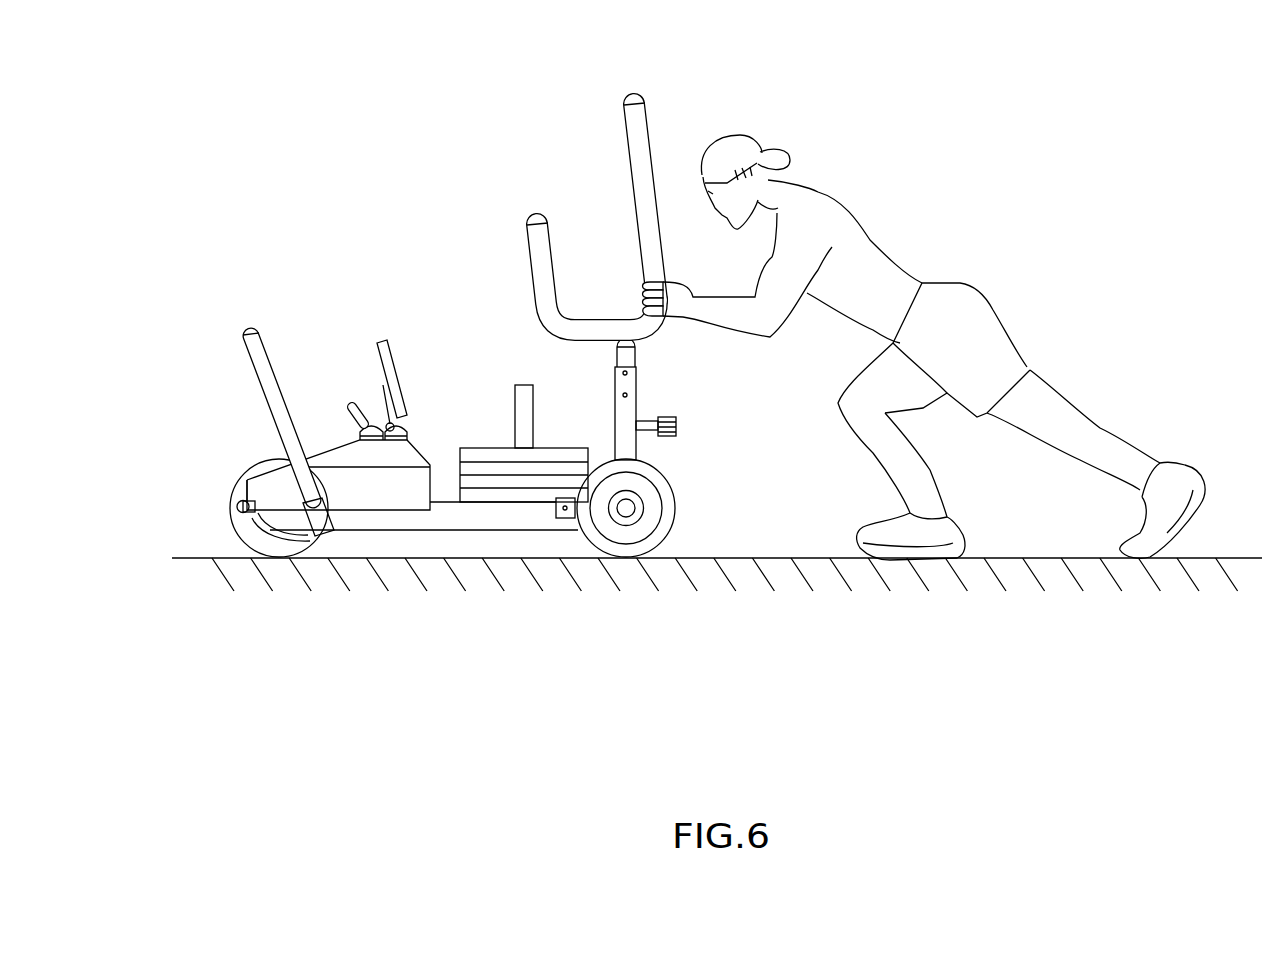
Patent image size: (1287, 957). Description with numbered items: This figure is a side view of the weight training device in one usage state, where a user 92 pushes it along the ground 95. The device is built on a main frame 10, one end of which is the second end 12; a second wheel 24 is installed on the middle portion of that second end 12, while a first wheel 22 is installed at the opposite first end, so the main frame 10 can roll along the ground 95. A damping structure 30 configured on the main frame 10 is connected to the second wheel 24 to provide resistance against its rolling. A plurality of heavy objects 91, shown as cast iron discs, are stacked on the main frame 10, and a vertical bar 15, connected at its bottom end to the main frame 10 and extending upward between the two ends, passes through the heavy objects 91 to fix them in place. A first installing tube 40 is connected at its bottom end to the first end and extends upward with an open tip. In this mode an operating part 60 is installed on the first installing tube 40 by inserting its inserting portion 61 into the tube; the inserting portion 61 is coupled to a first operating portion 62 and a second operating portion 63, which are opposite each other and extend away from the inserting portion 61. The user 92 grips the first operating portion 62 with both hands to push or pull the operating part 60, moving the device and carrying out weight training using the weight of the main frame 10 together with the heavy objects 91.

The main frame 10 is at (415, 530).
The second end 12 is at (243, 492).
The vertical bar 15 is at (515, 395).
The first wheel 22 is at (663, 540).
The second wheel 24 is at (232, 510).
The damping structure 30 is at (330, 450).
The first installing tube 40 is at (640, 400).
The operating part 60 is at (591, 202).
The inserting portion 61 is at (615, 359).
The first operating portion 62 is at (633, 171).
The second operating portion 63 is at (527, 254).
The heavy object 91 is at (474, 447).
The user 92 is at (843, 196).
The ground 95 is at (1217, 557).